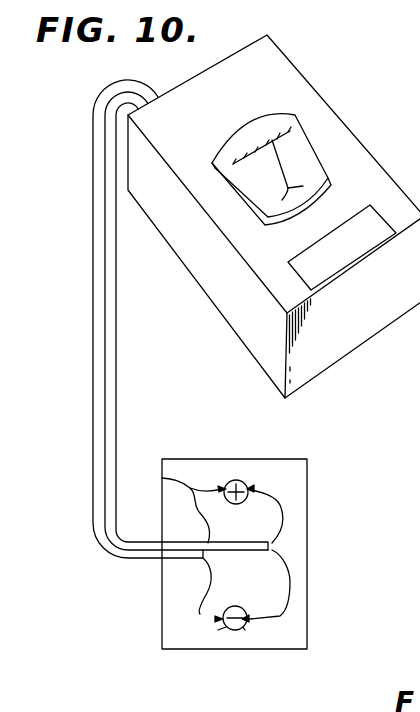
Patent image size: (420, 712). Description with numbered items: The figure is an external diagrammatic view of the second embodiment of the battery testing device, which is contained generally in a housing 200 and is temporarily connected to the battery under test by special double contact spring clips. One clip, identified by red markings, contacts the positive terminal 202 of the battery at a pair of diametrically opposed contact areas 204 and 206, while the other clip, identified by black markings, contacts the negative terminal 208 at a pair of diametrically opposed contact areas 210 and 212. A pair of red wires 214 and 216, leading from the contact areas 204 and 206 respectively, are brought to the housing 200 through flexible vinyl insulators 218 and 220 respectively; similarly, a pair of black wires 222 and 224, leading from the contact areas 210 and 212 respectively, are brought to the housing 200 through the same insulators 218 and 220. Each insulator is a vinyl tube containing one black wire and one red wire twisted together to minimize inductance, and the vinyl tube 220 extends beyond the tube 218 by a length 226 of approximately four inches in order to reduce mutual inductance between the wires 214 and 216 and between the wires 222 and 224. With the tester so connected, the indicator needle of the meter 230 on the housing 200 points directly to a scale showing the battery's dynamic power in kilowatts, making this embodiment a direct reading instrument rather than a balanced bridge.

The housing 200 is at (233, 330).
The meter 230 is at (301, 138).
The flexible vinyl insulator 218 is at (93, 307).
The flexible vinyl insulator 220 is at (116, 372).
The red wire 214 is at (163, 474).
The positive terminal 202 is at (236, 480).
The contact area 204 is at (220, 487).
The contact area 206 is at (254, 488).
The red wire 216 is at (283, 513).
The length 226 is at (234, 552).
The black wire 224 is at (292, 597).
The black wire 222 is at (218, 619).
The negative terminal 208 is at (230, 631).
The contact area 210 is at (218, 630).
The contact area 212 is at (245, 630).